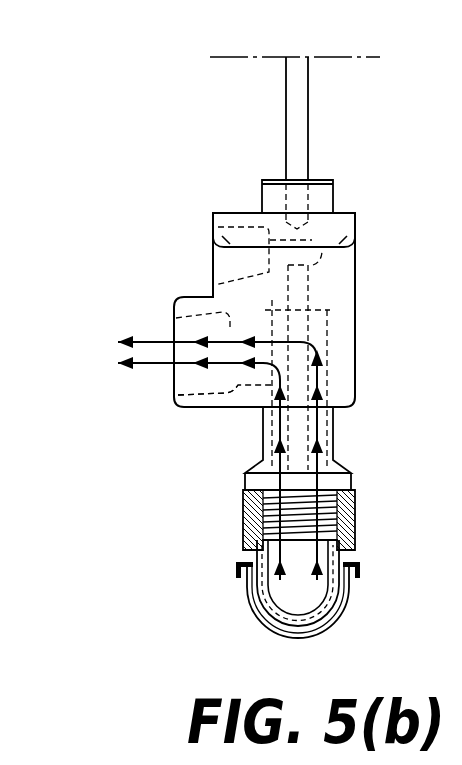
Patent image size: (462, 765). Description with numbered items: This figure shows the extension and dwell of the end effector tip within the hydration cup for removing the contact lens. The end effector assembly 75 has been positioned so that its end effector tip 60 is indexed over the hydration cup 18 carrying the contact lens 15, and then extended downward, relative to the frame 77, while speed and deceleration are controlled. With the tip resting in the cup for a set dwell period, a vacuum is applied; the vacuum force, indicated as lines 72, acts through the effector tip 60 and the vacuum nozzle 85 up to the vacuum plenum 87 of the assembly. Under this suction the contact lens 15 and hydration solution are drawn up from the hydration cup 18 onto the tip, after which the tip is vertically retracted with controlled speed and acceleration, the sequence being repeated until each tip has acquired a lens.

The frame 77 is at (313, 45).
The vacuum nozzle 85 is at (296, 160).
The end effector assembly 75 is at (388, 300).
The vacuum force lines 72 is at (92, 320).
The vacuum plenum 87 is at (165, 385).
The end effector tip 60 is at (353, 540).
The contact lens 15 is at (340, 630).
The hydration cup 18 is at (249, 611).